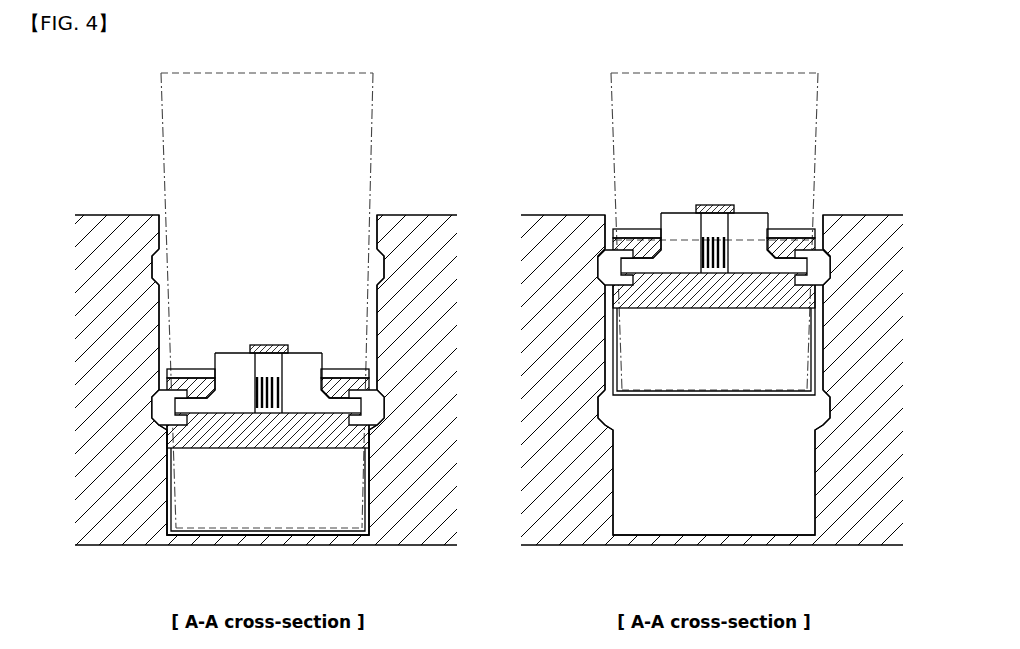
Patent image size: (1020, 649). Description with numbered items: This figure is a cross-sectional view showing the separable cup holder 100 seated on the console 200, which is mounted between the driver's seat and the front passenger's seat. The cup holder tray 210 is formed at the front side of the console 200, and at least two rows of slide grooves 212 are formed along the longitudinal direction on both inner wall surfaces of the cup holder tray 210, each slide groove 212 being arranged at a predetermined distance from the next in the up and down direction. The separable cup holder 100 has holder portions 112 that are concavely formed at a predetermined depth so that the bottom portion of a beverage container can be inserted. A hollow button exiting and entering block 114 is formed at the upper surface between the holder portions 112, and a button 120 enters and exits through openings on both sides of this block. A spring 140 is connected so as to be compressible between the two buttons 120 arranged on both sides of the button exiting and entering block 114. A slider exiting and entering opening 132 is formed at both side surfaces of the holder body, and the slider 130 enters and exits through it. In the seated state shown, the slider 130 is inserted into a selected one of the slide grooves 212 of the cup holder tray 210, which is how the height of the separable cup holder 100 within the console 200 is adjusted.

The separable cup holder 100 is at (206, 447).
The holder portion 112 is at (285, 440).
The button exiting and entering block 114 is at (268, 346).
The button 120 is at (301, 360).
The slider 130 is at (157, 410).
The slider exiting and entering opening 132 is at (352, 370).
The spring 140 is at (280, 394).
The console 200 is at (420, 215).
The cup holder tray 210 is at (159, 229).
The slide groove 212 is at (160, 292).